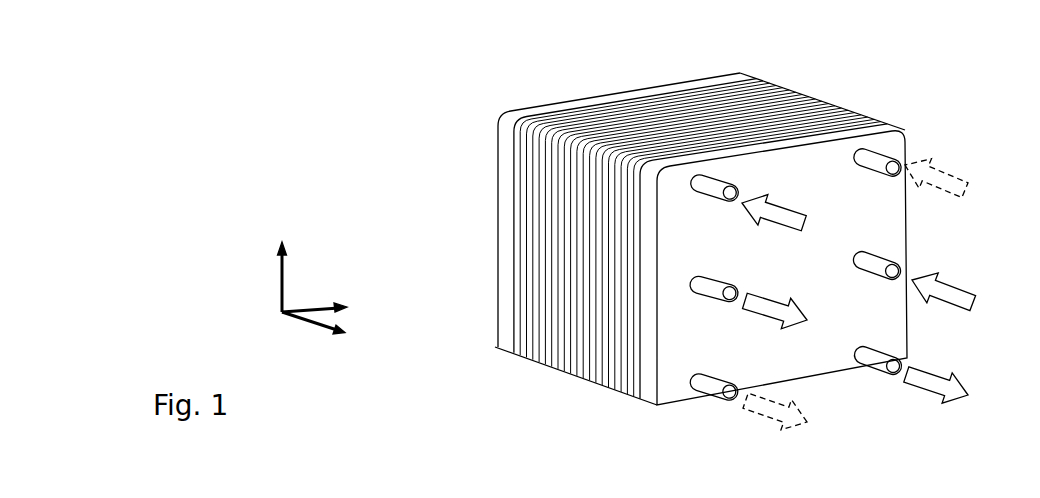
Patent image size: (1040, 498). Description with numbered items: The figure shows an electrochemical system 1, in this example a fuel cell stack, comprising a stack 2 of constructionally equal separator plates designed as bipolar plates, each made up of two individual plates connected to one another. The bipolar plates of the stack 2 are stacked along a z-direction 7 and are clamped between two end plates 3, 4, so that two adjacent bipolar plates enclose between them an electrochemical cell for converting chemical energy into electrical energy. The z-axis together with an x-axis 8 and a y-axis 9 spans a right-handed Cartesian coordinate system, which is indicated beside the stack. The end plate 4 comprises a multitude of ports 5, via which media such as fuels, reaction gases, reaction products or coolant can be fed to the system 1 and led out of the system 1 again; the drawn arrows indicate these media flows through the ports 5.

The electrochemical system 1 is at (895, 406).
The stack 2 is at (860, 92).
The end plate 3 is at (507, 208).
The end plate 4 is at (650, 363).
The ports 5 is at (712, 193).
The z-direction 7 is at (303, 325).
The x-axis 8 is at (312, 308).
The y-axis 9 is at (282, 282).